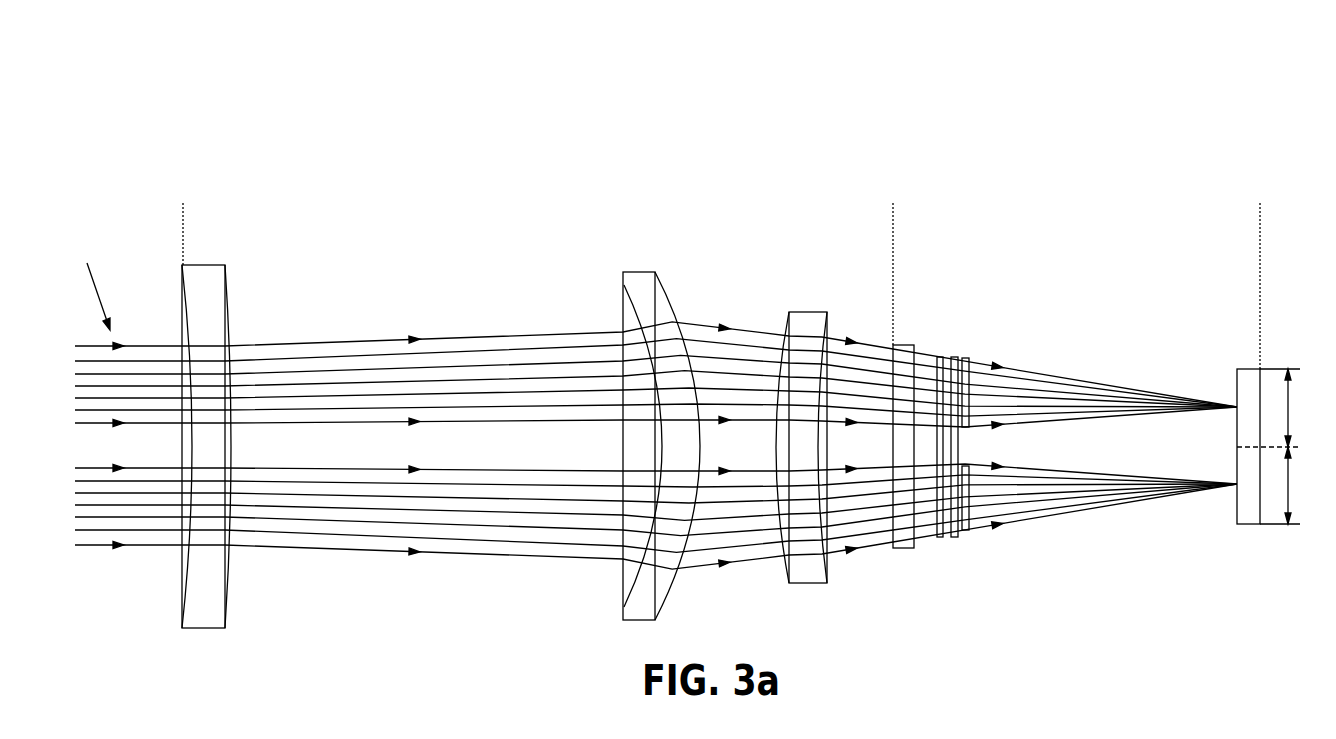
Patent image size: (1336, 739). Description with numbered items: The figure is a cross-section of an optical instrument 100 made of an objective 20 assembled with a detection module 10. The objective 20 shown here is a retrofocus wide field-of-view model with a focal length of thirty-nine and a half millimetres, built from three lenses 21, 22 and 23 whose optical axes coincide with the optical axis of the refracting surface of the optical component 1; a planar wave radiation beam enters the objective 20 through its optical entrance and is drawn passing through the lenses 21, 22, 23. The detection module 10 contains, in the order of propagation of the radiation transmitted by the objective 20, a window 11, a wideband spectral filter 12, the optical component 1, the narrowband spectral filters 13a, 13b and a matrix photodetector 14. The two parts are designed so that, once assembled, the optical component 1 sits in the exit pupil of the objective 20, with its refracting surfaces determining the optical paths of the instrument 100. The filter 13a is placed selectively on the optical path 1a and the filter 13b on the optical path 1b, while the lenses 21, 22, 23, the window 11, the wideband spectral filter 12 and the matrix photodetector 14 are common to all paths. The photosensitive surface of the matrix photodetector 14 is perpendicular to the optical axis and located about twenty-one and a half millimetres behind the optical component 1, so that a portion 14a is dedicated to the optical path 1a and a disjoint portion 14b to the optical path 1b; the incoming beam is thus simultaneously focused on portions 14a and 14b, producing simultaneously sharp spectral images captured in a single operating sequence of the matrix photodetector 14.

The optical instrument 100 is at (200, 113).
The objective 20 is at (893, 203).
The detection module 10 is at (1265, 203).
The lens 21 is at (203, 265).
The lens 22 is at (641, 272).
The lens 23 is at (808, 312).
The window 11 is at (903, 345).
The wideband spectral filter 12 is at (940, 357).
The optical component 1 is at (955, 357).
The narrowband spectral filter 13a is at (966, 358).
The narrowband spectral filter 13b is at (966, 531).
The matrix photodetector 14 is at (1250, 368).
The portion of the photosensitive surface 14a is at (1309, 408).
The portion of the photosensitive surface 14b is at (1310, 485).
The optical path 1a is at (1040, 433).
The optical path 1b is at (1145, 473).